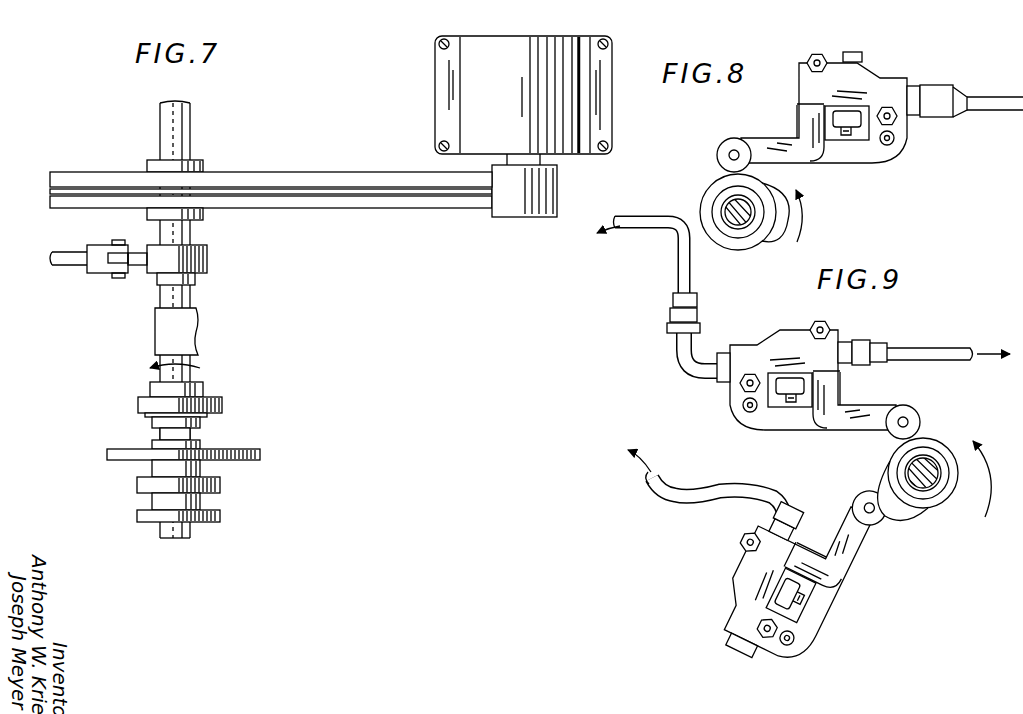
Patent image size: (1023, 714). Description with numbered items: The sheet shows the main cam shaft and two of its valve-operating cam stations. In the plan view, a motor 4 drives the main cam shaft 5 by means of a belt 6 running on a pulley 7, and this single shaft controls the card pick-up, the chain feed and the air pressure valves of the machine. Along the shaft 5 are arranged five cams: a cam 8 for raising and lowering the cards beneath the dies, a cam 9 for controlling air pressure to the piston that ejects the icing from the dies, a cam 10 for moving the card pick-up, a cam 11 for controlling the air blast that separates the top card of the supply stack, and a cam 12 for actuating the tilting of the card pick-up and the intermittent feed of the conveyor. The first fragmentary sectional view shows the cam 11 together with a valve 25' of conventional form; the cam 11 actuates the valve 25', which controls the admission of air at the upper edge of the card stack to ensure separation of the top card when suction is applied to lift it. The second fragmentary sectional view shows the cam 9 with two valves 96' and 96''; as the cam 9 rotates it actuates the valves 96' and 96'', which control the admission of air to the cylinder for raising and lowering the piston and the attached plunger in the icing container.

In FIG. 7, the motor 4 is at (489, 59).
In FIG. 7, the main cam shaft 5 is at (187, 137).
In FIG. 8, the main cam shaft 5 is at (728, 204).
In FIG. 9, the main cam shaft 5 is at (932, 465).
In FIG. 7, the belt 6 is at (355, 176).
In FIG. 7, the pulley 7 is at (72, 172).
In FIG. 7, the cam 8 is at (208, 258).
In FIG. 7, the cam 9 is at (222, 403).
In FIG. 9, the cam 9 is at (913, 506).
In FIG. 7, the cam 10 is at (240, 450).
In FIG. 7, the cam 11 is at (222, 485).
In FIG. 8, the cam 11 is at (778, 196).
In FIG. 7, the cam 12 is at (222, 516).
In FIG. 8, the valve 25' is at (870, 112).
In FIG. 9, the valve 96' is at (803, 327).
In FIG. 9, the valve 96'' is at (760, 566).